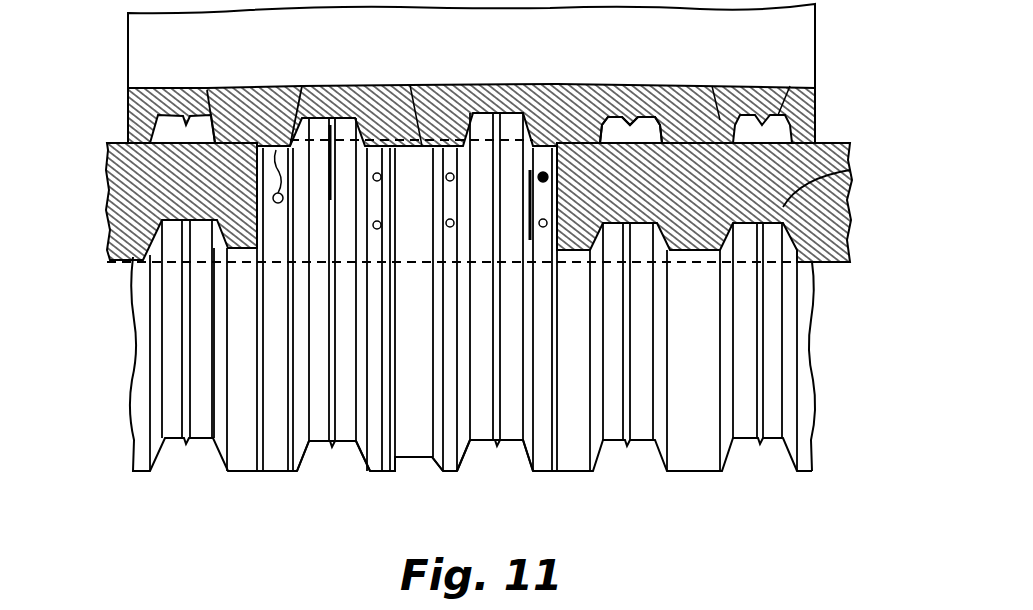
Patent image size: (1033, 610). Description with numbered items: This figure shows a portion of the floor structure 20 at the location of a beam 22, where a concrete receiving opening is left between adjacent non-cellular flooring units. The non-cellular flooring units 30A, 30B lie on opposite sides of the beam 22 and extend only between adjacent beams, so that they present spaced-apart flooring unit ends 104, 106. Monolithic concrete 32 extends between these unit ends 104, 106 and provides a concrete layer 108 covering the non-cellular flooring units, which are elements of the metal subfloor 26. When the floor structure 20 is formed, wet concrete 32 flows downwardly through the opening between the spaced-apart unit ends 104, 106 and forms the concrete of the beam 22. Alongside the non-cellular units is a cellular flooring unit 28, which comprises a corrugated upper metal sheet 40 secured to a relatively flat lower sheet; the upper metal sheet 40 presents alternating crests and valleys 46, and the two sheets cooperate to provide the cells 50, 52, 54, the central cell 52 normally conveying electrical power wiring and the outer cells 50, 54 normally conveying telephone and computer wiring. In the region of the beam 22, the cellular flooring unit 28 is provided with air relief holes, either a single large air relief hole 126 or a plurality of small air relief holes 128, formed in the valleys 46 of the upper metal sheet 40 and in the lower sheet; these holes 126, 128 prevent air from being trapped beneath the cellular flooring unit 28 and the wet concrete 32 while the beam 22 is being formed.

The floor structure 20 is at (837, 78).
The beam 22 is at (817, 267).
The metal subfloor 26 is at (130, 378).
The cellular flooring unit 28 is at (407, 85).
The non-cellular flooring unit 30A is at (143, 471).
The non-cellular flooring unit 30B is at (207, 95).
The concrete 32 is at (712, 86).
The upper metal sheet 40 is at (515, 85).
The valley 46 is at (242, 468).
The outer cell 50 is at (333, 455).
The central cell 52 is at (415, 462).
The outer cell 54 is at (497, 455).
The flooring unit end 104 is at (850, 176).
The flooring unit end 106 is at (133, 118).
The concrete layer 108 is at (590, 84).
The air relief hole 126 is at (322, 63).
The air relief holes 128 is at (447, 180).